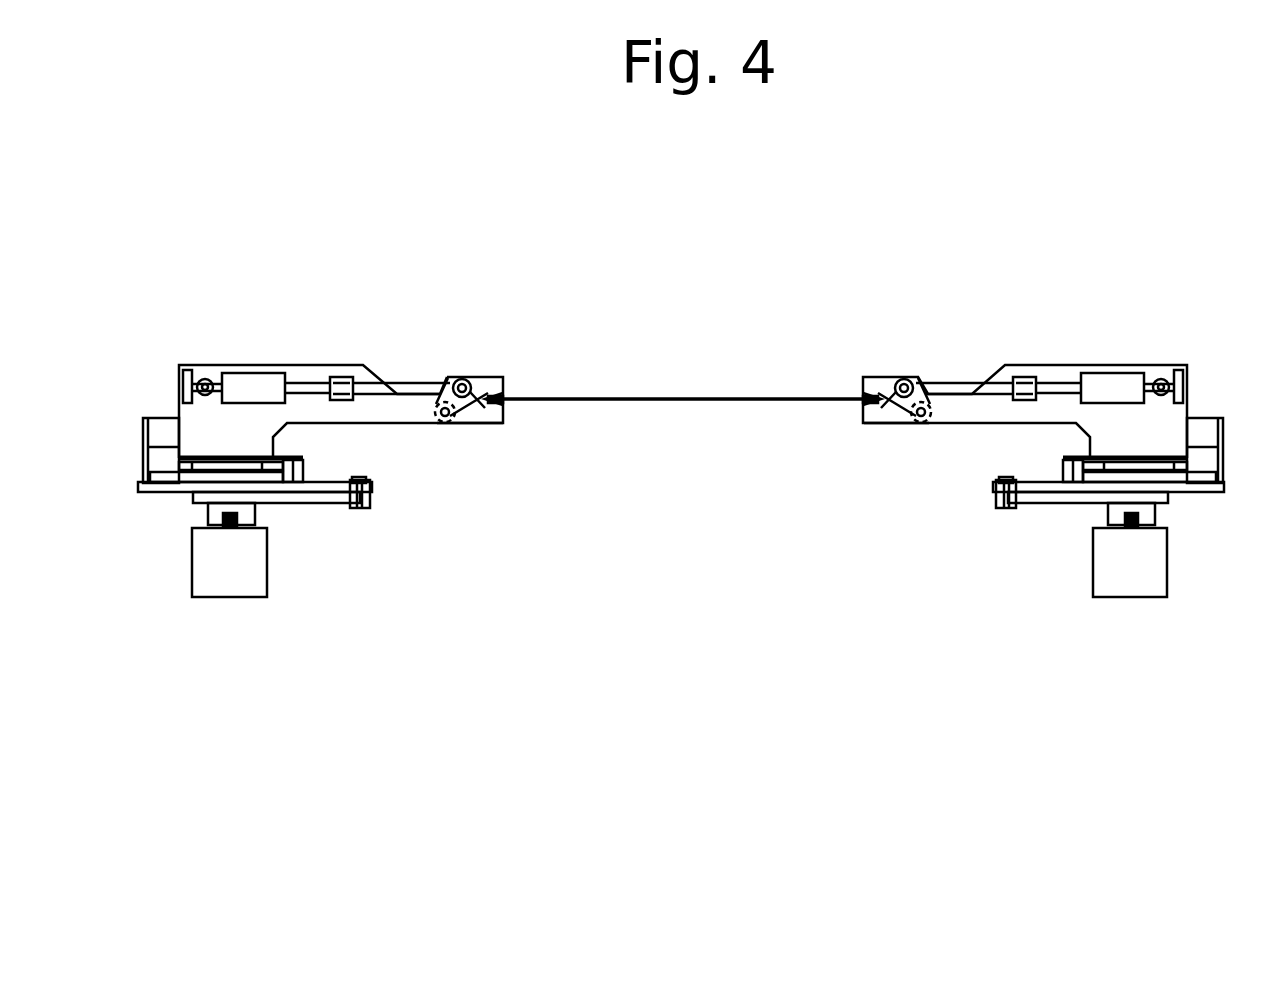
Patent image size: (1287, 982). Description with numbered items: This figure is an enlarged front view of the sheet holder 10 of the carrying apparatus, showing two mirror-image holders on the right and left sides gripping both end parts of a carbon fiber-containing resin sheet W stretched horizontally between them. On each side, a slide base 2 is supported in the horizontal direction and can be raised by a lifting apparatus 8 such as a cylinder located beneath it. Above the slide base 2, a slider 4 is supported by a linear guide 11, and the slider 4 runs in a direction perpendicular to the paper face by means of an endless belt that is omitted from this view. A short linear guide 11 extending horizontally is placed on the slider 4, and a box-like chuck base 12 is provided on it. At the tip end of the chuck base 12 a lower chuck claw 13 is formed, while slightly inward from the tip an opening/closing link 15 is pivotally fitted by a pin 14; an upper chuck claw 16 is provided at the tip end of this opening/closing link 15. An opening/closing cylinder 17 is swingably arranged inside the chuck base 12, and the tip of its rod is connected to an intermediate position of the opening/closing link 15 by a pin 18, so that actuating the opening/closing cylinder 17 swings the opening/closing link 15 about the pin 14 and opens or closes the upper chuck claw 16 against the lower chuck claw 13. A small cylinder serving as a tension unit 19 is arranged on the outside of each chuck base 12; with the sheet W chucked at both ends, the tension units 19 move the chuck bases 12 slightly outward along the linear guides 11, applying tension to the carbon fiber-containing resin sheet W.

The slide base 2 is at (235, 577).
The slider 4 is at (333, 487).
The lifting apparatus 8 is at (245, 513).
The sheet holder 10 is at (401, 347).
The linear guide 11 is at (163, 478).
The chuck base 12 is at (304, 370).
The lower chuck claw 13 is at (505, 404).
The pin 14 is at (443, 422).
The opening/closing link 15 is at (488, 374).
The upper chuck claw 16 is at (503, 390).
The opening/closing cylinder 17 is at (240, 378).
The pin 18 is at (461, 376).
The tension unit 19 is at (161, 422).
The carbon fiber-containing resin sheet W is at (696, 397).